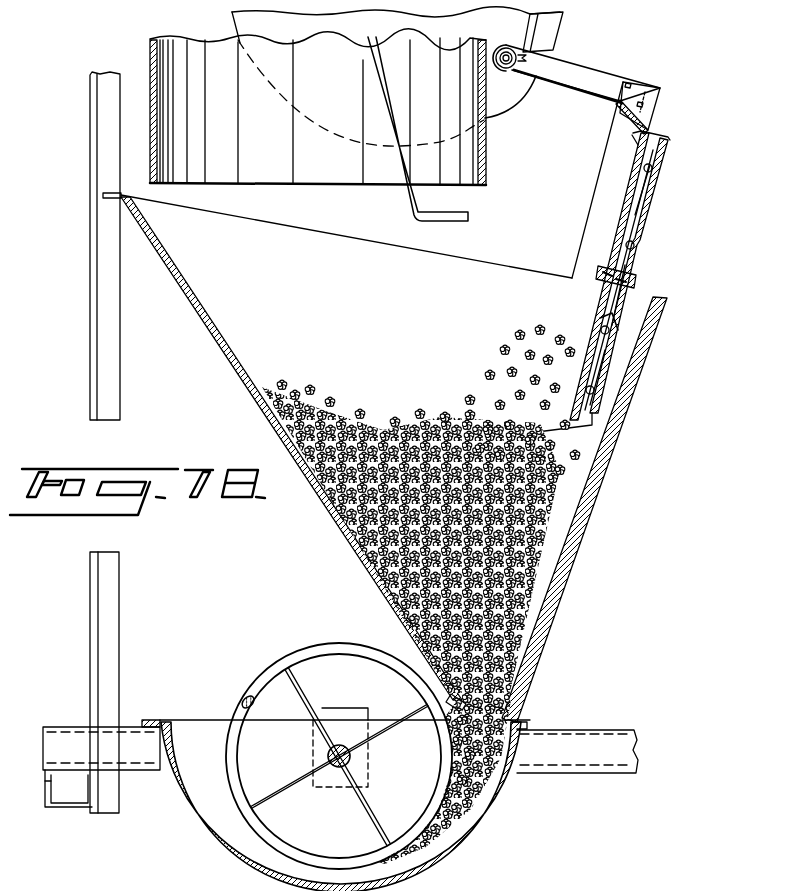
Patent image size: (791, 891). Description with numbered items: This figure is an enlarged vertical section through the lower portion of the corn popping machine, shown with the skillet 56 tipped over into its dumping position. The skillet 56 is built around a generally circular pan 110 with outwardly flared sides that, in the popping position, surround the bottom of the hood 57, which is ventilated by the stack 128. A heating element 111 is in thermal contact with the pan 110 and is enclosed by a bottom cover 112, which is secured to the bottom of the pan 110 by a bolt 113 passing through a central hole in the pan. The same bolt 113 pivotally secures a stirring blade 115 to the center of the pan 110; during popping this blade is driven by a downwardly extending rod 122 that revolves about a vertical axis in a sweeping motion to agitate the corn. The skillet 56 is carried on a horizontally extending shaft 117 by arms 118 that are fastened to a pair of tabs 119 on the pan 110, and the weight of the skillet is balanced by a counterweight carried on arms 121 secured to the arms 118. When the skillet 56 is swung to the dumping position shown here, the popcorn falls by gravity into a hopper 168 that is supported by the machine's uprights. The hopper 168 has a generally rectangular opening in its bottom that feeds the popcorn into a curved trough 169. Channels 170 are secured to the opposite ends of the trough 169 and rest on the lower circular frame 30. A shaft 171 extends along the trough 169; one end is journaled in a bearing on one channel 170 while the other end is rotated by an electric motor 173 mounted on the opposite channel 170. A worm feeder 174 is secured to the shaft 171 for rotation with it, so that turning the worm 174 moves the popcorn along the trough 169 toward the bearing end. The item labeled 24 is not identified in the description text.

The hopper funnel 24 is at (385, 528).
The lower circular frame 30 is at (52, 808).
The skillet 56 is at (625, 281).
The hood 57 is at (490, 125).
The pan 110 is at (595, 185).
The heating element 111 is at (656, 178).
The bottom cover 112 is at (648, 201).
The bolt 113 is at (643, 270).
The stirring blade 115 is at (632, 158).
The shaft 117 is at (530, 52).
The arms 118 is at (598, 72).
The tabs 119 is at (662, 90).
The arms 121 is at (548, 29).
The rod 122 is at (387, 88).
The stack 128 is at (119, 641).
The hopper 168 is at (588, 514).
The curved trough 169 is at (436, 863).
The channels 170 is at (590, 730).
The shaft 171 is at (338, 768).
The electric motor 173 is at (348, 708).
The worm feeder 174 is at (323, 643).